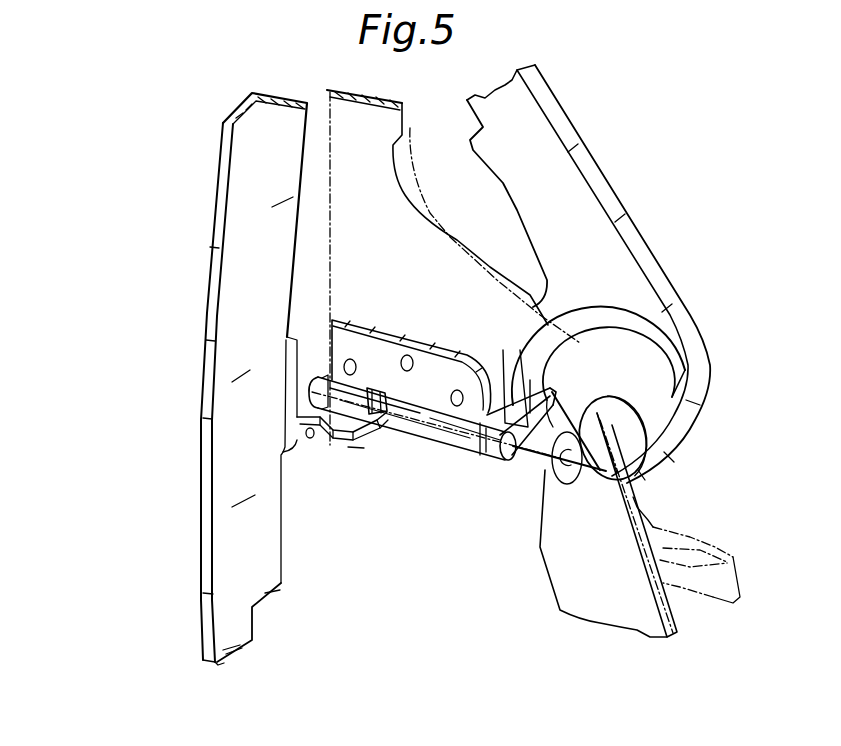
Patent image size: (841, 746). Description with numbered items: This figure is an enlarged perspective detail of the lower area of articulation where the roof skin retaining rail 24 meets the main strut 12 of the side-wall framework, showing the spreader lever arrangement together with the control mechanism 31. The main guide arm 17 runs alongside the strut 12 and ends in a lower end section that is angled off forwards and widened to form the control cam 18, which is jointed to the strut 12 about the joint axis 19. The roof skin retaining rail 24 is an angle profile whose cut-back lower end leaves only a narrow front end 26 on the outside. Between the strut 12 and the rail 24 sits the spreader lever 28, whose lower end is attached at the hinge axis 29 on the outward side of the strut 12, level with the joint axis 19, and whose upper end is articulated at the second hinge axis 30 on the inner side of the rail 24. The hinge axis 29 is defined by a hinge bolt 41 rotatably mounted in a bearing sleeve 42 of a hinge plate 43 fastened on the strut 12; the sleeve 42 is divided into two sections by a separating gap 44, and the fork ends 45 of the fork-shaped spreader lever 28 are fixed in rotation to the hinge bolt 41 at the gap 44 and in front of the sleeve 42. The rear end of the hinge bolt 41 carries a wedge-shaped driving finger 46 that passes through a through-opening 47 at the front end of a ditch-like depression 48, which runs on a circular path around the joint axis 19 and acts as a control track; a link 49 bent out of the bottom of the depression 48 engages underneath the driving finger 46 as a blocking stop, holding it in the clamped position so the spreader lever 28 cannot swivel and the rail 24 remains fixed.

The main strut 12 is at (375, 202).
The main guide arm 17 is at (560, 199).
The control cam 18 is at (545, 298).
The joint axis 19 is at (537, 563).
The roof skin retaining rail 24 is at (238, 480).
The front end 26 is at (253, 637).
The spreader lever 28 is at (320, 440).
The hinge axis 29 is at (548, 460).
The second hinge axis 30 is at (358, 448).
The control mechanism 31 is at (653, 353).
The hinge bolt 41 is at (312, 385).
The bearing sleeve 42 is at (438, 447).
The hinge plate 43 is at (383, 350).
The separating gap 44 is at (372, 386).
The fork ends 45 is at (307, 393).
The driving finger 46 is at (545, 478).
The through-opening 47 is at (520, 392).
The depression 48 is at (610, 307).
The link 49 is at (478, 430).